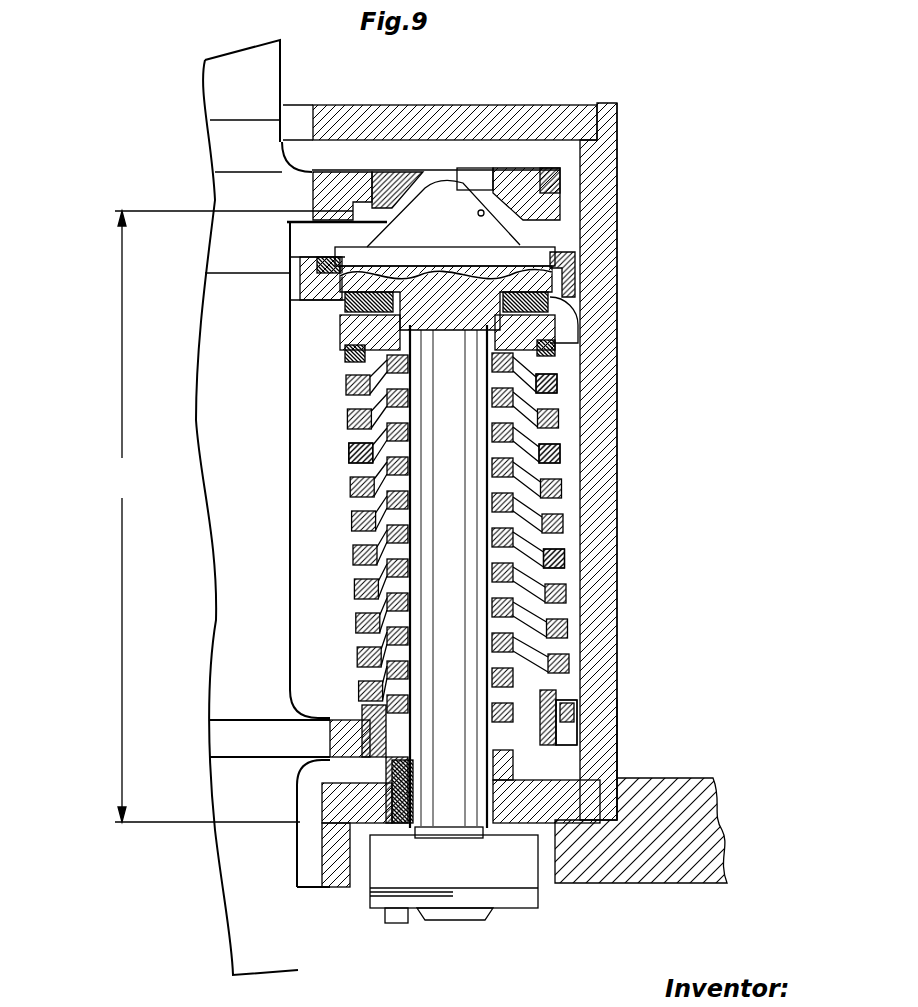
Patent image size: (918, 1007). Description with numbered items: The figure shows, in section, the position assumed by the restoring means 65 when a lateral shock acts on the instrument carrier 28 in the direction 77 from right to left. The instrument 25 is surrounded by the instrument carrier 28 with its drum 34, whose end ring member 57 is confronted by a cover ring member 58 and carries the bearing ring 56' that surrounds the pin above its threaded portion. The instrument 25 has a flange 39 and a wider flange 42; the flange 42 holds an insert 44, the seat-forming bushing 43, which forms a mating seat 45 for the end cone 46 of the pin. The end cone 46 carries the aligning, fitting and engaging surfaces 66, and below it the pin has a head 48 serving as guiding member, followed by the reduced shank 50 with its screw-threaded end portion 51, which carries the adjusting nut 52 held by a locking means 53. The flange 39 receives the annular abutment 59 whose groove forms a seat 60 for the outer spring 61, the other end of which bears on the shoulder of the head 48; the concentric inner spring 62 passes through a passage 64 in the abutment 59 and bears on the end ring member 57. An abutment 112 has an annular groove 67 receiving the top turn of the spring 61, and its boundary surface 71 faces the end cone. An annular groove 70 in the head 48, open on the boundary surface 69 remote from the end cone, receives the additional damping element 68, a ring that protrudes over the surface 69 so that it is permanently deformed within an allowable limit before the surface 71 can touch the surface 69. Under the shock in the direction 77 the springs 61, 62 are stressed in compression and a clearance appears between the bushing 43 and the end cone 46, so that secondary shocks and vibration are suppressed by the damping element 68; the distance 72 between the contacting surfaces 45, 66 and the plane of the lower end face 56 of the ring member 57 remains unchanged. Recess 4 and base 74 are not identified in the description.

The recess 4 is at (487, 178).
The instrument 25 is at (282, 75).
The instrument carrier 28 is at (618, 590).
The drum 34 is at (614, 248).
The flange 39 is at (234, 730).
The wider flange 42 is at (228, 190).
The bushing 43 is at (374, 178).
The insert 44 is at (545, 183).
The seat 45 is at (407, 198).
The end cone 46 is at (455, 188).
The head 48 is at (537, 255).
The shank 50 is at (545, 505).
The screw-threaded end portion 51 is at (476, 920).
The adjusting nut 52 is at (528, 900).
The locking means 53 is at (400, 923).
The lower end face 56 is at (367, 854).
The bearing ring 56' is at (470, 851).
The end ring member 57 is at (600, 812).
The cover ring member 58 is at (329, 120).
The abutment 59 is at (556, 745).
The seat 60 is at (562, 717).
The outer spring 61 is at (560, 453).
The inner spring 62 is at (558, 396).
The passage 64 is at (367, 707).
The restoring means 65 is at (348, 449).
The engaging surfaces 66 is at (484, 211).
The annular groove 67 is at (558, 346).
The additional damping element 68 is at (340, 305).
The boundary surface 69 is at (436, 325).
The annular groove 70 is at (542, 300).
The boundary surface 71 is at (337, 328).
The distance 72 is at (231, 516).
The base 74 is at (706, 872).
The direction 77 is at (619, 732).
The abutment 112 is at (560, 312).